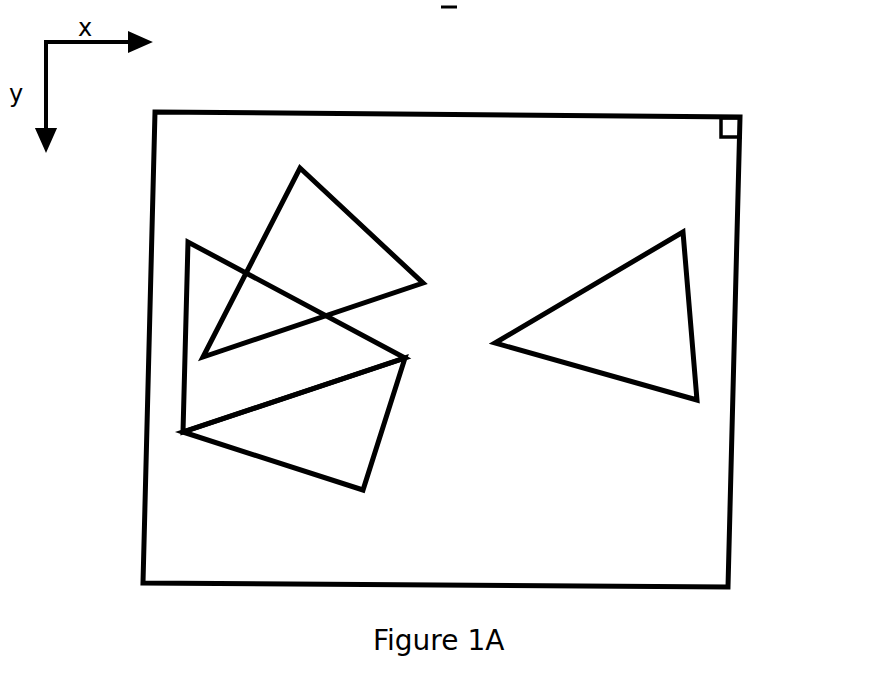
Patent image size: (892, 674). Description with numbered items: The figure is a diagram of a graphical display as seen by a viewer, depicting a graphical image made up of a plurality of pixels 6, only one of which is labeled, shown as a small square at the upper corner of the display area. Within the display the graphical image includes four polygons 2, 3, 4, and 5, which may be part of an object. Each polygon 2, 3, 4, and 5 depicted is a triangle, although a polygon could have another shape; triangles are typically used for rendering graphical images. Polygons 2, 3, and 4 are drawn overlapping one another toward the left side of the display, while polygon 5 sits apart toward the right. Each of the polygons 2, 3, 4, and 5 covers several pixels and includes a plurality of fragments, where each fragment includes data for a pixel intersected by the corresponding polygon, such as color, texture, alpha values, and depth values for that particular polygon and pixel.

The polygon 2 is at (185, 313).
The polygon 3 is at (280, 207).
The polygon 4 is at (240, 451).
The polygon 5 is at (693, 333).
The pixel 6 is at (742, 122).